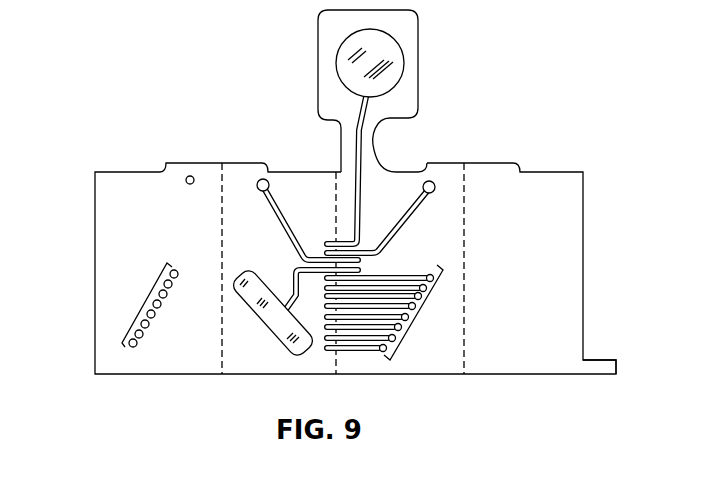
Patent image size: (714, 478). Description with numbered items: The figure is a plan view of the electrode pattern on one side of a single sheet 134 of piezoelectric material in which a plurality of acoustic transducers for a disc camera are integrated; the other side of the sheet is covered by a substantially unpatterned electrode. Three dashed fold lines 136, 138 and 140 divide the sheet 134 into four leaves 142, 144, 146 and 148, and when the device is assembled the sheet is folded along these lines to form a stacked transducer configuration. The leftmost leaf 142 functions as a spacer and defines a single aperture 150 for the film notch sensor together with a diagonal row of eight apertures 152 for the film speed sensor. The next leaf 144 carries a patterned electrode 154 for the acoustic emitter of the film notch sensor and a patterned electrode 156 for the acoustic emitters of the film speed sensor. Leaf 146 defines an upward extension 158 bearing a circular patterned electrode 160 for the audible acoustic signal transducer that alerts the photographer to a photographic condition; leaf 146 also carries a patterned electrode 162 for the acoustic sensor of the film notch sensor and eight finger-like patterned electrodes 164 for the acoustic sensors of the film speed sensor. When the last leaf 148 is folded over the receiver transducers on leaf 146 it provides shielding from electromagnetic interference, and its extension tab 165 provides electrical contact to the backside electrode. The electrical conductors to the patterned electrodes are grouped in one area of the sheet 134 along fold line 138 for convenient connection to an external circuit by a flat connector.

The sheet of piezoelectric material 134 is at (94, 154).
The fold line 136 is at (218, 180).
The fold line 138 is at (336, 200).
The fold line 140 is at (468, 192).
The leaf 142 is at (108, 251).
The leaf 144 is at (242, 186).
The leaf 146 is at (400, 188).
The leaf 148 is at (567, 188).
The aperture 150 is at (188, 176).
The apertures 152 is at (145, 303).
The patterned electrode 154 is at (267, 178).
The patterned electrode 156 is at (278, 323).
The extension 158 is at (407, 33).
The patterned electrode 160 is at (392, 68).
The patterned electrode 162 is at (434, 180).
The patterned electrodes 164 is at (413, 316).
The extension tab 165 is at (600, 367).